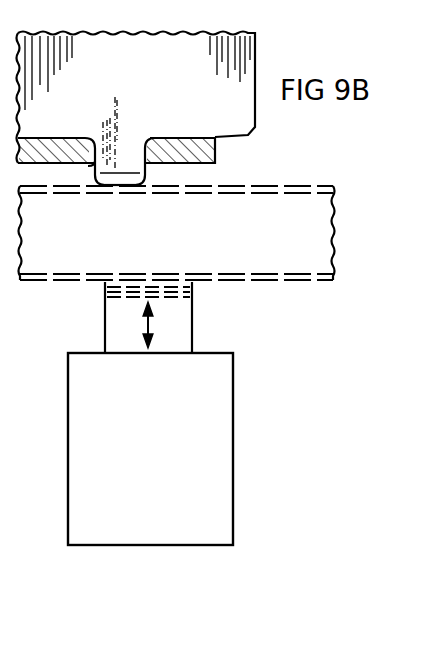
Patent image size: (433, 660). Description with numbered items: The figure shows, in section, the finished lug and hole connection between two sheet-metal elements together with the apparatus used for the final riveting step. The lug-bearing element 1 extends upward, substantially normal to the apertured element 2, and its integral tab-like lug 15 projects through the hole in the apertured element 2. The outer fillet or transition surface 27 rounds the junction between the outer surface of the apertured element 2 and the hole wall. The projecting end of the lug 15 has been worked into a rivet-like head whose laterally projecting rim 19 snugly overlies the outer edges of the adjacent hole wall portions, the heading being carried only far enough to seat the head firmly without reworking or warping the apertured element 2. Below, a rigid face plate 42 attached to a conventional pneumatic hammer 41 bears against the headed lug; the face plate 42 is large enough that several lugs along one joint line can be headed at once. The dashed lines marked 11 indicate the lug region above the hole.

The lug-bearing element 1 is at (257, 63).
The apertured element 2 is at (216, 147).
The fiber bundle 11 is at (140, 98).
The tab-like lug 15 is at (128, 153).
The laterally projecting rim 19 is at (115, 188).
The outer fillet or transition surface 27 is at (88, 165).
The pneumatic hammer 41 is at (116, 524).
The rigid face plate 42 is at (250, 259).